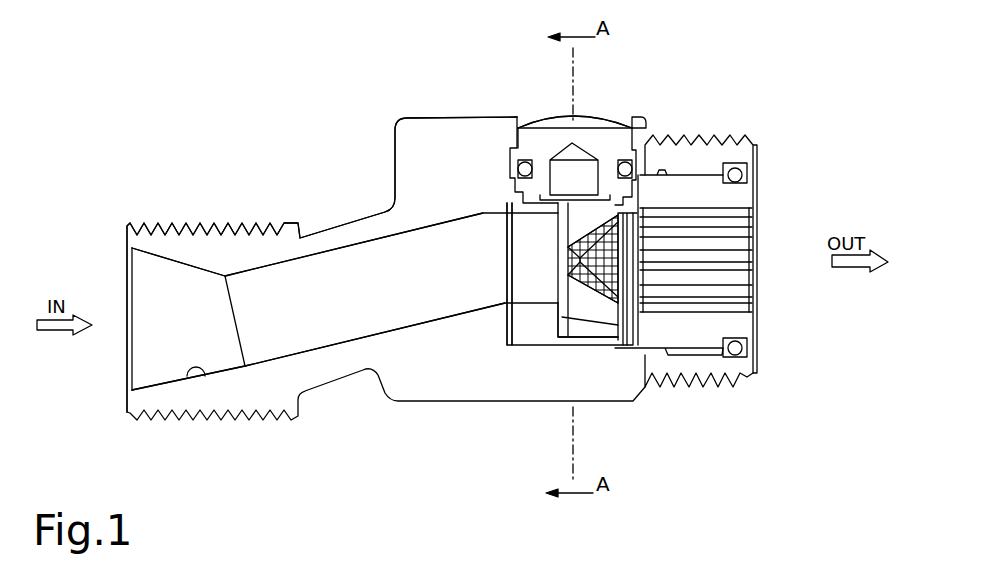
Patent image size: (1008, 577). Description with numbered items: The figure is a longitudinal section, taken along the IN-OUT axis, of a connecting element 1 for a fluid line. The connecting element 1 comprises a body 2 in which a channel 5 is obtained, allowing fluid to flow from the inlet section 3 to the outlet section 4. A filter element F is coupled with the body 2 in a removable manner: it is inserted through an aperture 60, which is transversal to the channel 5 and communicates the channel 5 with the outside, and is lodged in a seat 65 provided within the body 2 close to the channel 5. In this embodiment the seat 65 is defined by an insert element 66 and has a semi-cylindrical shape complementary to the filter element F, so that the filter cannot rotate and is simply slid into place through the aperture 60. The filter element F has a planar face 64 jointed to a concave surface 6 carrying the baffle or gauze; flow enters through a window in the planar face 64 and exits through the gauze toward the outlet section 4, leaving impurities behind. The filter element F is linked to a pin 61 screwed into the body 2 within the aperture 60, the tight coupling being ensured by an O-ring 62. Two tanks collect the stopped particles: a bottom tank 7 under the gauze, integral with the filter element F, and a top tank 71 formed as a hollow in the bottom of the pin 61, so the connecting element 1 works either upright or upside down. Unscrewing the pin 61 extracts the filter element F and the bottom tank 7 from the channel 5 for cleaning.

The connecting element 1 is at (303, 143).
The body 2 is at (420, 143).
The inlet section 3 is at (190, 378).
The outlet section 4 is at (757, 245).
The channel 5 is at (360, 305).
The concave surface 6 is at (643, 207).
The bottom tank 7 is at (573, 323).
The aperture 60 is at (527, 125).
The pin 61 is at (568, 115).
The O-ring 62 is at (641, 116).
The planar face 64 is at (552, 269).
The seat 65 is at (560, 315).
The insert element 66 is at (510, 200).
The top tank 71 is at (582, 175).
The filter element F is at (597, 310).